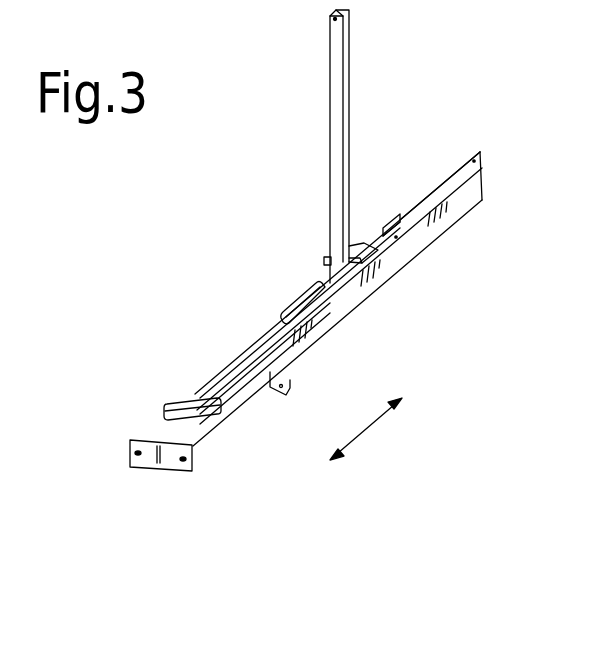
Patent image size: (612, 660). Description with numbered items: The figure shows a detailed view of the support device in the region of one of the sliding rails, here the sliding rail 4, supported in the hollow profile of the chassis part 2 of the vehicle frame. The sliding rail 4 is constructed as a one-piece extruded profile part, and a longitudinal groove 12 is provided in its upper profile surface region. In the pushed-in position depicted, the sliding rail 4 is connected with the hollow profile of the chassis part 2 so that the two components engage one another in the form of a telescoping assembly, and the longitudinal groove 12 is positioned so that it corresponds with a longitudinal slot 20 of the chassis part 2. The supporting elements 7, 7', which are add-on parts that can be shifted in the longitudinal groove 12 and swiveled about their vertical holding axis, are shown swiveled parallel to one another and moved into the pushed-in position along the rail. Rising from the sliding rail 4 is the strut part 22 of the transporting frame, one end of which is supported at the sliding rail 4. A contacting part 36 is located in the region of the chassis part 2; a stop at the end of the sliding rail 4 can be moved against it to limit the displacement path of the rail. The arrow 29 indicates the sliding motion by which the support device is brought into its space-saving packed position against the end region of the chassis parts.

The chassis part 2 is at (470, 193).
The contacting part 36 is at (438, 188).
The longitudinal groove 12 is at (212, 392).
The sliding rail 4 is at (236, 376).
The supporting element 7 is at (165, 391).
The supporting element 7' is at (293, 286).
The strut part 22 is at (340, 80).
The longitudinal slot 20 is at (393, 226).
The sliding motion arrow 29 is at (373, 424).